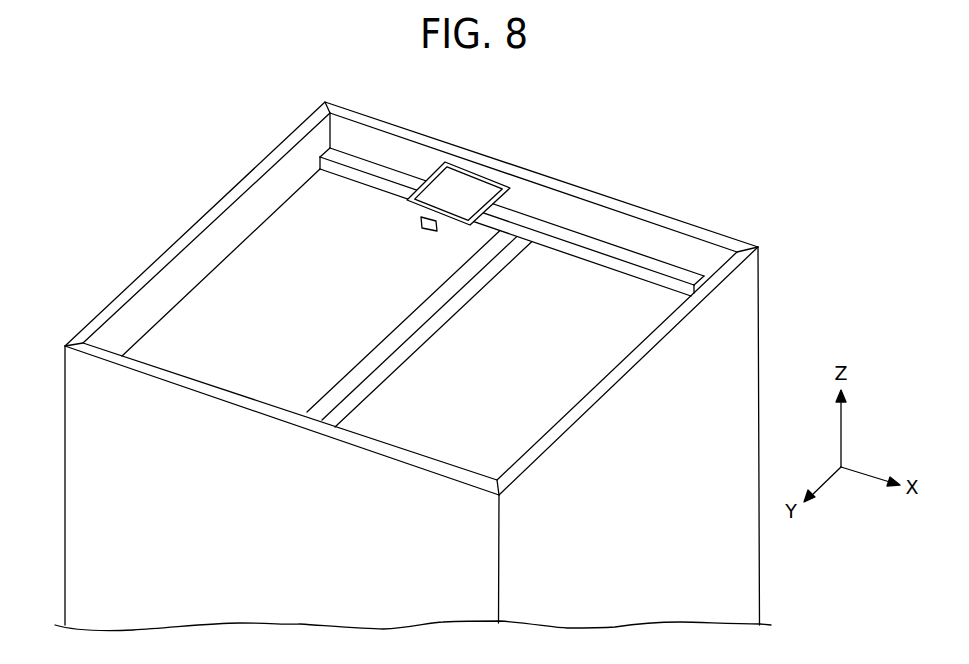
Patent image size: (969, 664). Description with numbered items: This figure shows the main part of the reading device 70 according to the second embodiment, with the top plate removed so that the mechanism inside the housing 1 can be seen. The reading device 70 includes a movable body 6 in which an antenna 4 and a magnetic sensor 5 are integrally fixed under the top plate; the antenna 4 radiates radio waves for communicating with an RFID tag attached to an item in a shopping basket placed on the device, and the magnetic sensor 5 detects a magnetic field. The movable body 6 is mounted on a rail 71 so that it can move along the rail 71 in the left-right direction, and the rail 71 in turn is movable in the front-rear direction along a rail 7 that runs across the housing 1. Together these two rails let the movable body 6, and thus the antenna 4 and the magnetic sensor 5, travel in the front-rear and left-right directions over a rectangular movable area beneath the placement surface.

The housing 1 is at (73, 443).
The antenna 4 is at (452, 185).
The magnetic sensor 5 is at (437, 228).
The movable body 6 is at (476, 148).
The rail 7 is at (359, 370).
The reading device 70 is at (677, 151).
The rail 71 is at (591, 259).